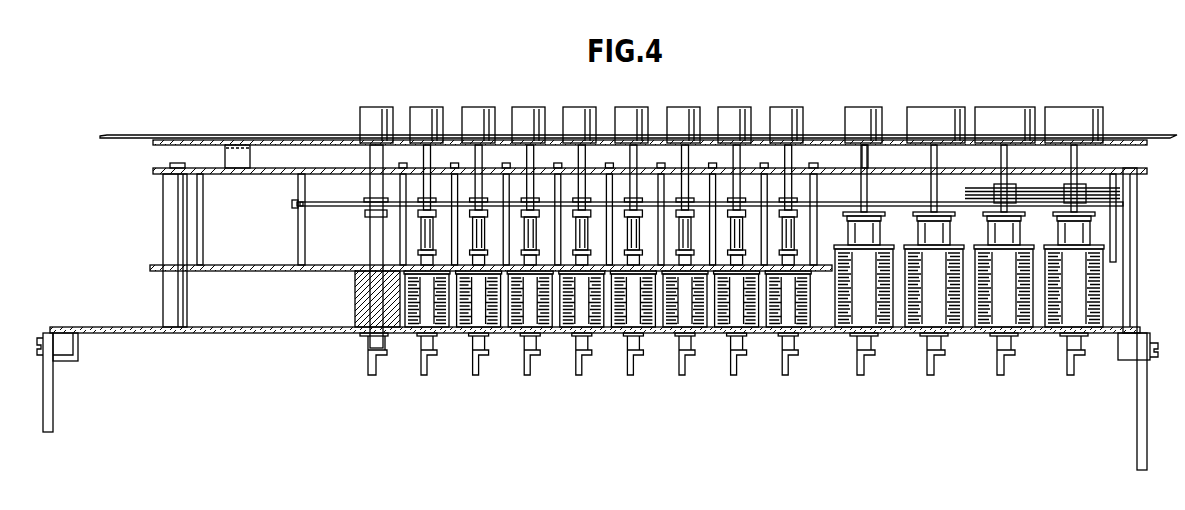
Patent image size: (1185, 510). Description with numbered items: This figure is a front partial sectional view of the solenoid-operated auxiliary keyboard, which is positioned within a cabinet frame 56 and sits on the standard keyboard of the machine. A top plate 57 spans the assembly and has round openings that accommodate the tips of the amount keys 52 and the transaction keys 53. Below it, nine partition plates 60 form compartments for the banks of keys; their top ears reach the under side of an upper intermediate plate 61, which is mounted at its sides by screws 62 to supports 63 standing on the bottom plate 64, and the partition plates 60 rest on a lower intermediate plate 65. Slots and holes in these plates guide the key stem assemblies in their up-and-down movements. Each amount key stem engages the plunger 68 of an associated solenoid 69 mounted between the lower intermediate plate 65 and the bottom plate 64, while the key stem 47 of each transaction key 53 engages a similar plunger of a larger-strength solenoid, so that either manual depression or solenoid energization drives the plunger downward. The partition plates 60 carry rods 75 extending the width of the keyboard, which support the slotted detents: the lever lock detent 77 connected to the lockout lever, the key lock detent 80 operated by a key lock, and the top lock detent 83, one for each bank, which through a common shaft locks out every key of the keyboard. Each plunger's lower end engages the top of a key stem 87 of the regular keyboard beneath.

The key stem 47 is at (868, 157).
The amount keys 52 is at (628, 112).
The transaction keys 53 is at (1003, 108).
The cabinet frame 56 is at (165, 135).
The top plate 57 is at (183, 140).
The partition plates 60 is at (205, 220).
The upper intermediate plate 61 is at (233, 174).
The screws 62 is at (165, 168).
The supports 63 is at (1125, 285).
The bottom plate 64 is at (230, 334).
The lower intermediate plate 65 is at (240, 272).
The plunger 68 is at (370, 237).
The solenoid 69 is at (355, 305).
The rods 75 is at (975, 188).
The lever lock detent 77 is at (1010, 200).
The key lock detent 80 is at (1070, 195).
The top lock detent 83 is at (578, 200).
The key stem 87 is at (380, 365).